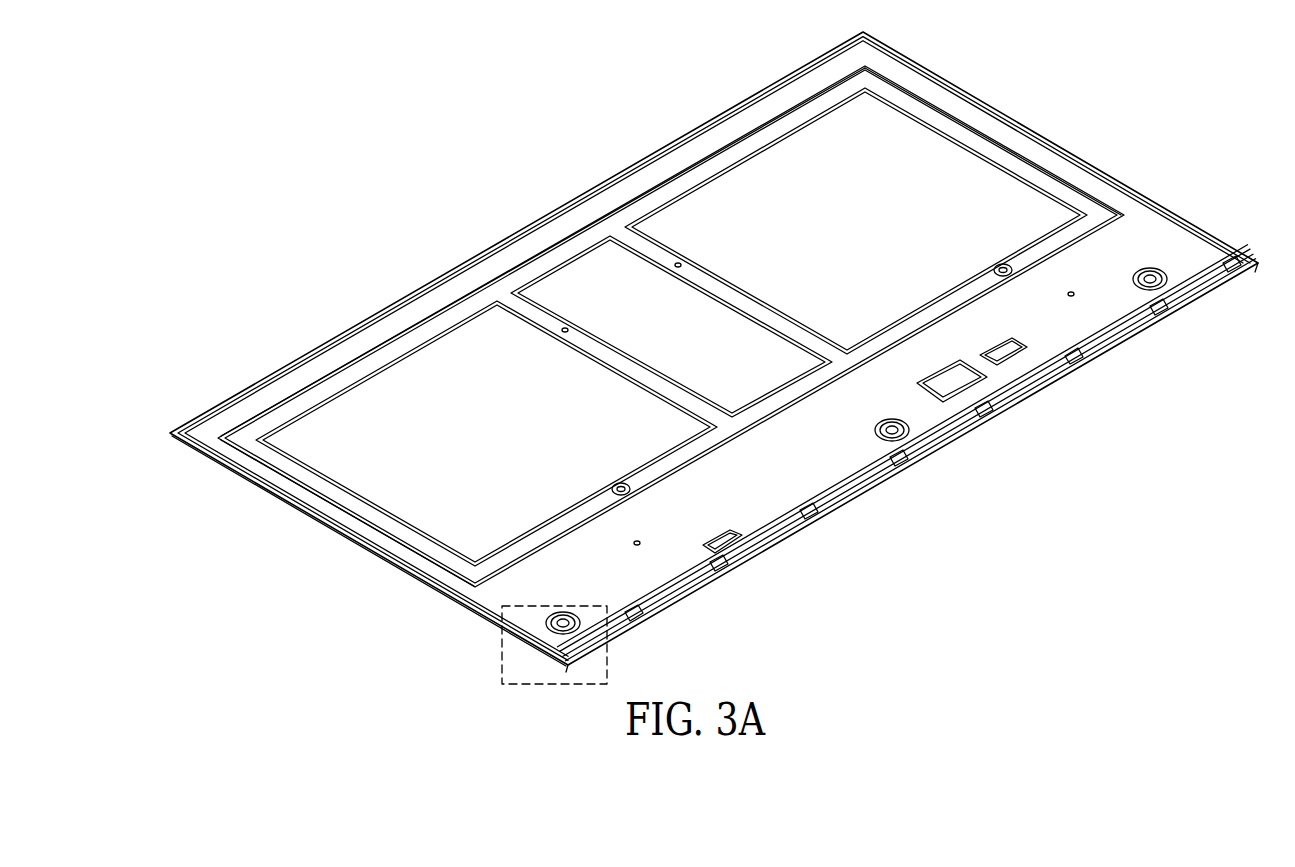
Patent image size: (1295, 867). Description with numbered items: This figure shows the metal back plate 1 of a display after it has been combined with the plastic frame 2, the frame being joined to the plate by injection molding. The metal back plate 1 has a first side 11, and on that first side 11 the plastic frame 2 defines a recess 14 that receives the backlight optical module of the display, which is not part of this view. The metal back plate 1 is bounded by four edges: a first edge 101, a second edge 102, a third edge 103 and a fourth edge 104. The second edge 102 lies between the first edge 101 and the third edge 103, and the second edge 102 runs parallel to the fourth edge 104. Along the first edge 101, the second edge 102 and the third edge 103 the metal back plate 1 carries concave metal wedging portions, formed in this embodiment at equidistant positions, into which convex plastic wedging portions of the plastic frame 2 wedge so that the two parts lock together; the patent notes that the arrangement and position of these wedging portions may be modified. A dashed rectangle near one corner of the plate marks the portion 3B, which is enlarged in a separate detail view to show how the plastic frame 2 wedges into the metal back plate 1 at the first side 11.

The metal back plate 1 is at (375, 342).
The plastic frame 2 is at (266, 491).
The first side 11 is at (200, 443).
The recess 14 is at (250, 407).
The first edge 101 is at (350, 525).
The second edge 102 is at (507, 260).
The third edge 103 is at (1020, 145).
The fourth edge 104 is at (830, 463).
The portion 3B is at (502, 648).